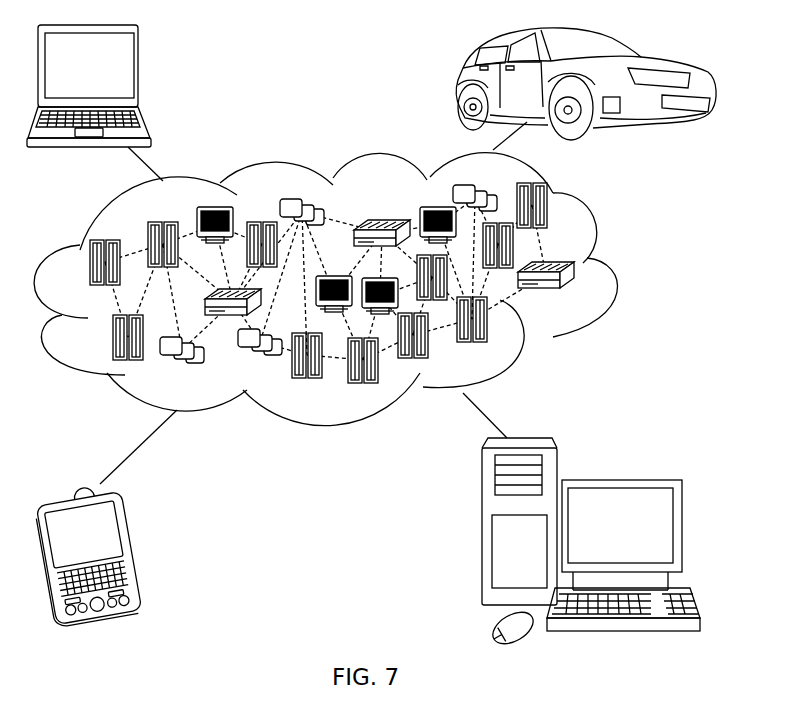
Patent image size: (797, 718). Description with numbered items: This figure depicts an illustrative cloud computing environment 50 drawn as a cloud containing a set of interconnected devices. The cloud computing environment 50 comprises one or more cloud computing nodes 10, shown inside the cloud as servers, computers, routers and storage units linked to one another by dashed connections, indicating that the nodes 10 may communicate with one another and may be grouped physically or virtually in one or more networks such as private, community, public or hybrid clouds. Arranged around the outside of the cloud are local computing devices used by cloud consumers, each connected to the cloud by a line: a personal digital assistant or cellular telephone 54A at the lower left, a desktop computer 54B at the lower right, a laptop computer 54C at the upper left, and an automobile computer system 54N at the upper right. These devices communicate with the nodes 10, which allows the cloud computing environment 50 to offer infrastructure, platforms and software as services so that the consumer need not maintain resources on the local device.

The cloud computing node 10 is at (348, 289).
The cloud computing environment 50 is at (620, 272).
The personal digital assistant or cellular telephone 54A is at (130, 546).
The desktop computer 54B is at (620, 480).
The laptop computer 54C is at (138, 73).
The automobile computer system 54N is at (461, 83).